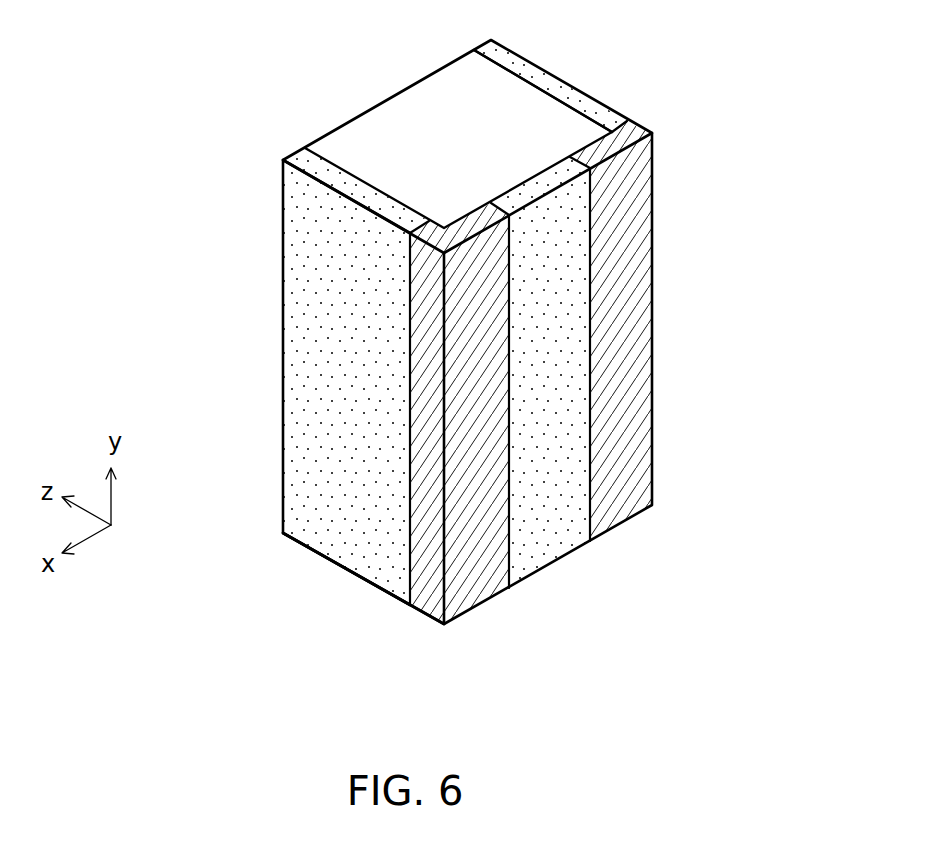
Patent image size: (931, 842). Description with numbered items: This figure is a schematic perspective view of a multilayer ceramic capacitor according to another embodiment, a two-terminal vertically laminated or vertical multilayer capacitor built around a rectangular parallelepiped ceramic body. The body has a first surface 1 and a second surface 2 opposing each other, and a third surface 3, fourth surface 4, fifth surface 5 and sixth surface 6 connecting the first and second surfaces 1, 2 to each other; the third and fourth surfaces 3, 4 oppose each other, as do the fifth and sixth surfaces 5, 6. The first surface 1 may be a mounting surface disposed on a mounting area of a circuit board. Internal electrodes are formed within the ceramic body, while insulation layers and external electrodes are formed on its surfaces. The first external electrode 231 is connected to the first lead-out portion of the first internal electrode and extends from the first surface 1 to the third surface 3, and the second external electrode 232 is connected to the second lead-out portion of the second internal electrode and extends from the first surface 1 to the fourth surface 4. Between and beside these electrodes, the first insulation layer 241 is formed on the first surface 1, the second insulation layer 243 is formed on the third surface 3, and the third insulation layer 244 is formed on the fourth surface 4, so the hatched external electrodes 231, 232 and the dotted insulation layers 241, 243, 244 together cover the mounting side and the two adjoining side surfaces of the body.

The first surface 1 is at (553, 503).
The second surface 2 is at (352, 153).
The third surface 3 is at (313, 405).
The fourth surface 4 is at (518, 115).
The fifth surface 5 is at (423, 120).
The sixth surface 6 is at (377, 558).
The first external electrode 231 is at (483, 595).
The second external electrode 232 is at (625, 305).
The first insulation layer 241 is at (537, 563).
The second insulation layer 243 is at (308, 283).
The third insulation layer 244 is at (572, 95).